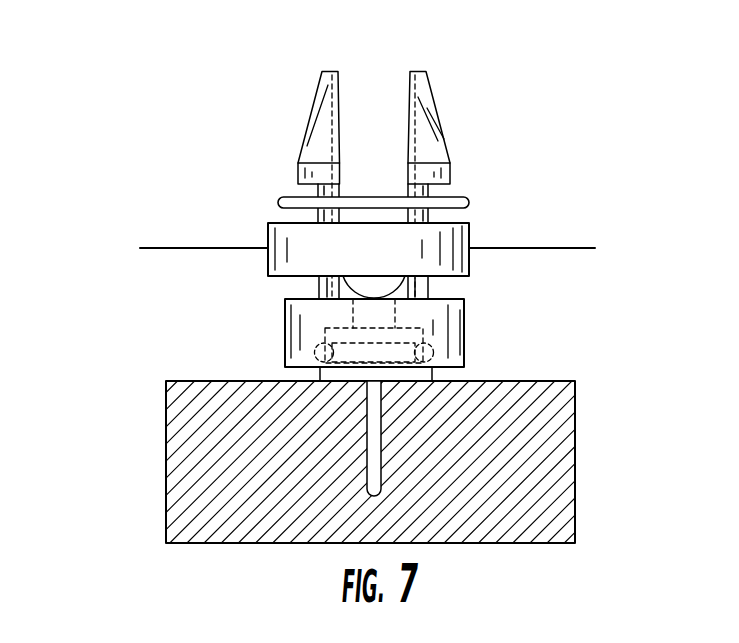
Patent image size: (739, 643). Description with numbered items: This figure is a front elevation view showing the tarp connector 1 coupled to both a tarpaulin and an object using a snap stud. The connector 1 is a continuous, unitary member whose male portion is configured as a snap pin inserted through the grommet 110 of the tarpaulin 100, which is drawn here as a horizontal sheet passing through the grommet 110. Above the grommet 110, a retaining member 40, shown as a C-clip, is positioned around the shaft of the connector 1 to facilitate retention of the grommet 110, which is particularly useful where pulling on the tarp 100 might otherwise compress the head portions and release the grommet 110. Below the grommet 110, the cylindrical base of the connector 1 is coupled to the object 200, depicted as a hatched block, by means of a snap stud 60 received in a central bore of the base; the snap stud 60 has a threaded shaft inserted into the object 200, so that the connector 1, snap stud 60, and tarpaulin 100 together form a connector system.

The connector 1 is at (582, 97).
The retaining member 40 is at (288, 197).
The snap stud 60 is at (325, 353).
The tarpaulin 100 is at (178, 247).
The grommet 110 is at (268, 225).
The object 200 is at (188, 457).